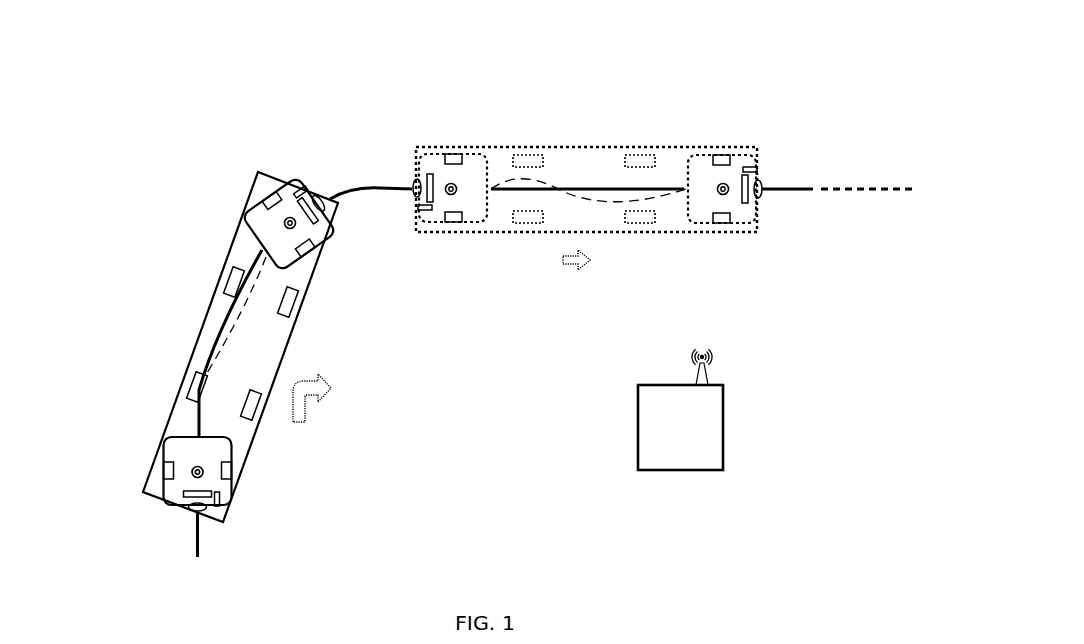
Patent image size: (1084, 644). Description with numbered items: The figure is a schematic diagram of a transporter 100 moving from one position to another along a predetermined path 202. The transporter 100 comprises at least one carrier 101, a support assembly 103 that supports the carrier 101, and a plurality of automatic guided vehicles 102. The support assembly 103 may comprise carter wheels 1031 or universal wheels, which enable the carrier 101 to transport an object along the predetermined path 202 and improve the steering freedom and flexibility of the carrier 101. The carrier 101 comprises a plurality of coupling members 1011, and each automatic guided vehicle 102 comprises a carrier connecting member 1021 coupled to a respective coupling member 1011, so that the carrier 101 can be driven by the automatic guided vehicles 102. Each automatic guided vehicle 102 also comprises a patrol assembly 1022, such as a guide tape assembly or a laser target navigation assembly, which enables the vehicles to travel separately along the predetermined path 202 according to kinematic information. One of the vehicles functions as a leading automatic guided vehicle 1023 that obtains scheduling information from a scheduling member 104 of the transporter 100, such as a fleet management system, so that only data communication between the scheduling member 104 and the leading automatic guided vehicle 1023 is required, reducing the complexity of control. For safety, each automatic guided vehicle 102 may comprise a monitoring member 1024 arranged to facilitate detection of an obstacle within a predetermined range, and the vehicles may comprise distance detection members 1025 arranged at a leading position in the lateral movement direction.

The transporter 100 is at (572, 60).
The carrier 101 is at (252, 164).
The automatic guided vehicle 102 is at (437, 170).
The support assembly 103 is at (187, 370).
The scheduling member 104 is at (668, 399).
The predetermined path 202 is at (377, 186).
The coupling member 1011 is at (286, 220).
The carrier connecting member 1021 is at (319, 248).
The patrol assembly 1022 is at (213, 488).
The leading automatic guided vehicle 1023 is at (698, 168).
The monitoring member 1024 is at (190, 510).
The distance detection member 1025 is at (228, 504).
The carter wheels 1031 is at (229, 274).